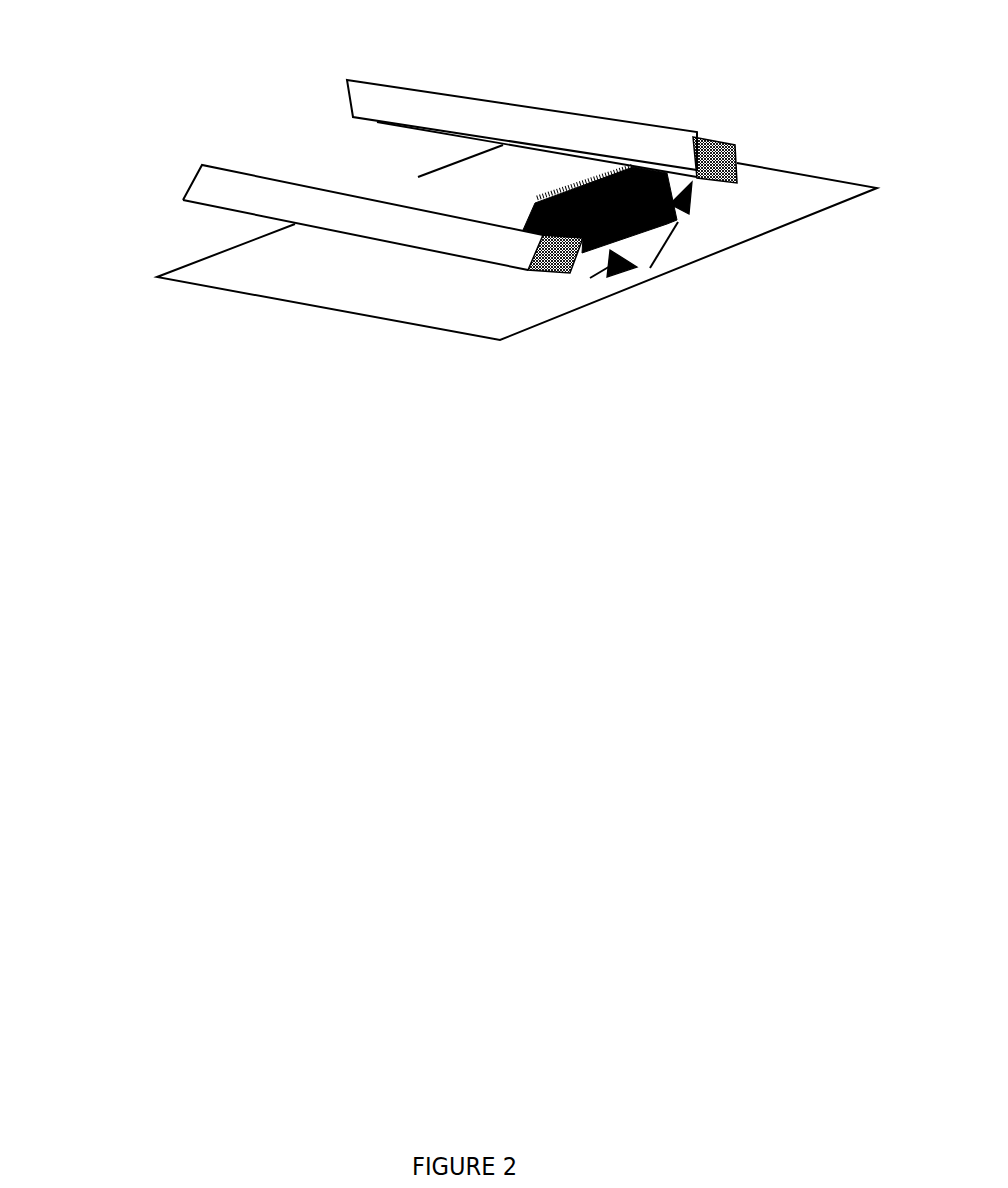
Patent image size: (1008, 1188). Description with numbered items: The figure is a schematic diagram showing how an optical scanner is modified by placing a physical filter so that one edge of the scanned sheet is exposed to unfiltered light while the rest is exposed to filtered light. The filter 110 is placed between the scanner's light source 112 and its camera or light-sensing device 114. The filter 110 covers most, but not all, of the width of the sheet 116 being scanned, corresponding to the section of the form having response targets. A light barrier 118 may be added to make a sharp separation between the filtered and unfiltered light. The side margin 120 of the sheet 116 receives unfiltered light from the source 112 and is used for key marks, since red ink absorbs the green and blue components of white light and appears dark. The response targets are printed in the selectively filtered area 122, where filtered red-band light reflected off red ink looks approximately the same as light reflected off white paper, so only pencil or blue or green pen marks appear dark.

The filter 110 is at (267, 158).
The light source 112 is at (200, 177).
The light-sensing device 114 is at (390, 95).
The sheet 116 is at (787, 175).
The light barrier 118 is at (662, 168).
The side margin 120 is at (483, 323).
The selectively filtered area 122 is at (280, 290).